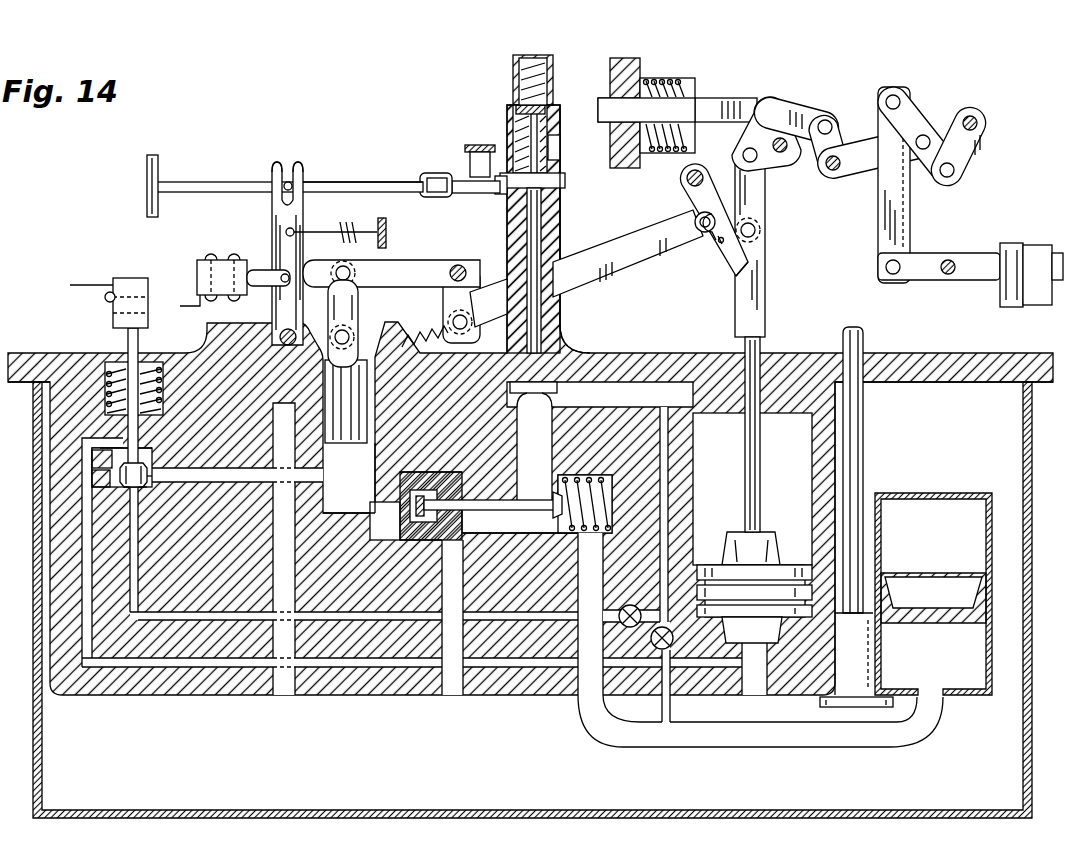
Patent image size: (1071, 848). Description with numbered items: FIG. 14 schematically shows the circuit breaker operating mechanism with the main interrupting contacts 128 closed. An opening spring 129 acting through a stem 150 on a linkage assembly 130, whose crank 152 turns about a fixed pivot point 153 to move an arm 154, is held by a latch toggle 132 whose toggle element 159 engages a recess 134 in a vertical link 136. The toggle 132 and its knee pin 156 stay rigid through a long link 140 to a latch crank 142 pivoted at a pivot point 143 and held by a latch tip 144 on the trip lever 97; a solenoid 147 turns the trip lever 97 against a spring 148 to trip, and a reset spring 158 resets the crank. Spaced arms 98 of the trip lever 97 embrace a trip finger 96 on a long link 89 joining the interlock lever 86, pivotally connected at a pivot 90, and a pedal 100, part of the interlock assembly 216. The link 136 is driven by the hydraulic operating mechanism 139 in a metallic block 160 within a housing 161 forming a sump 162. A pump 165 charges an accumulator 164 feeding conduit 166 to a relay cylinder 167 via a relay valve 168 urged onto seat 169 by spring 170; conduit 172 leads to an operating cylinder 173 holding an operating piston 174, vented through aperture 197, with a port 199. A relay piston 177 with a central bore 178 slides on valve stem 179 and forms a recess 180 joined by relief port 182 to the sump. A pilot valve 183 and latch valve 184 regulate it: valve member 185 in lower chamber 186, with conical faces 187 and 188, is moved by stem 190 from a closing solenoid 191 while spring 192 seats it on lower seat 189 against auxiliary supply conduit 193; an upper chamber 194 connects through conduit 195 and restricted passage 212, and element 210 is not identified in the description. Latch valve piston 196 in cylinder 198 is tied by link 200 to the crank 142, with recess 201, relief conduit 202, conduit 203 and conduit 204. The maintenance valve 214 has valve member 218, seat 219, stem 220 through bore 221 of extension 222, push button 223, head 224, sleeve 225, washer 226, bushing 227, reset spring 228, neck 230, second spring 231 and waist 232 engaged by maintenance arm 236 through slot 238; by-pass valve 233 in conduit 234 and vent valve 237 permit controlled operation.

The interlock lever 86 is at (439, 198).
The long link 89 is at (212, 182).
The pivot 90 is at (470, 165).
The trip finger 96 is at (288, 181).
The trip lever 97 is at (277, 210).
The arms 98 is at (272, 169).
The pedal 100 is at (147, 201).
The main interrupting contacts 128 is at (963, 284).
The opening spring 129 is at (661, 80).
The linkage assembly 130 is at (800, 96).
The latch toggle 132 is at (700, 246).
The recess 134 is at (736, 277).
The vertical link 136 is at (759, 292).
The hydraulic operating mechanism 139 is at (615, 334).
The long link 140 is at (629, 260).
The latch crank 142 is at (409, 262).
The pivot point 143 is at (460, 265).
The latch tip 144 is at (310, 261).
The solenoid 147 is at (222, 260).
The spring 148 is at (349, 222).
The stem 150 is at (718, 98).
The crank 152 is at (877, 163).
The fixed pivot point 153 is at (836, 171).
The arm 154 is at (915, 112).
The knee pin 156 is at (695, 220).
The reset spring 158 is at (415, 322).
The toggle element 159 is at (714, 240).
The metallic block 160 is at (23, 353).
The housing 161 is at (33, 441).
The sump 162 is at (893, 538).
The hydraulic accumulator 164 is at (958, 512).
The motor driven pump 165 is at (856, 517).
The conduit 166 is at (600, 564).
The relay cylinder 167 is at (490, 500).
The relay valve 168 is at (576, 478).
The seat 169 is at (560, 535).
The spring 170 is at (604, 499).
The second conduit 172 is at (515, 447).
The operating cylinder 173 is at (752, 489).
The operating piston 174 is at (763, 535).
The relay piston 177 is at (427, 472).
The central bore 178 is at (428, 542).
The stem 179 is at (525, 511).
The recess 180 is at (450, 490).
The relief port 182 is at (440, 582).
The pilot valve 183 is at (170, 461).
The latch valve 184 is at (380, 417).
The valve member 185 is at (123, 488).
The lower valve chamber 186 is at (149, 483).
The conical lower face 187 is at (133, 492).
The conical upper face 188 is at (152, 452).
The lower seat 189 is at (146, 491).
The stem 190 is at (139, 340).
The closing solenoid 191 is at (107, 297).
The spring 192 is at (166, 382).
The auxiliary supply conduit 193 is at (174, 612).
The upper pilot valve chamber 194 is at (150, 440).
The conduit 195 is at (85, 446).
The piston 196 is at (346, 401).
The aperture 197 is at (756, 683).
The cylinder 198 is at (415, 472).
The port 199 is at (669, 655).
The link 200 is at (357, 300).
The recess 201 is at (382, 416).
The relief conduit 202 is at (283, 415).
The conduit 203 is at (256, 483).
The conduit 204 is at (385, 512).
The valve seat 210 is at (110, 450).
The restricted passage 212 is at (100, 474).
The maintenance valve 214 is at (566, 233).
The interlock assembly 216 is at (354, 168).
The valve member 218 is at (558, 388).
The valve seat 219 is at (522, 407).
The elongate stem 220 is at (535, 320).
The bore 221 is at (539, 283).
The extension 222 is at (561, 248).
The push button 223 is at (514, 68).
The head 224 is at (513, 118).
The sleeve 225 is at (520, 140).
The washer 226 is at (516, 107).
The bushing 227 is at (557, 118).
The reset spring 228 is at (561, 135).
The neck 230 is at (565, 182).
The second spring 231 is at (533, 68).
The waist 232 is at (560, 157).
The valve 233 is at (651, 639).
The by-pass conduit 234 is at (660, 451).
The maintenance arm 236 is at (500, 189).
The second valve 237 is at (628, 604).
The slot 238 is at (497, 195).